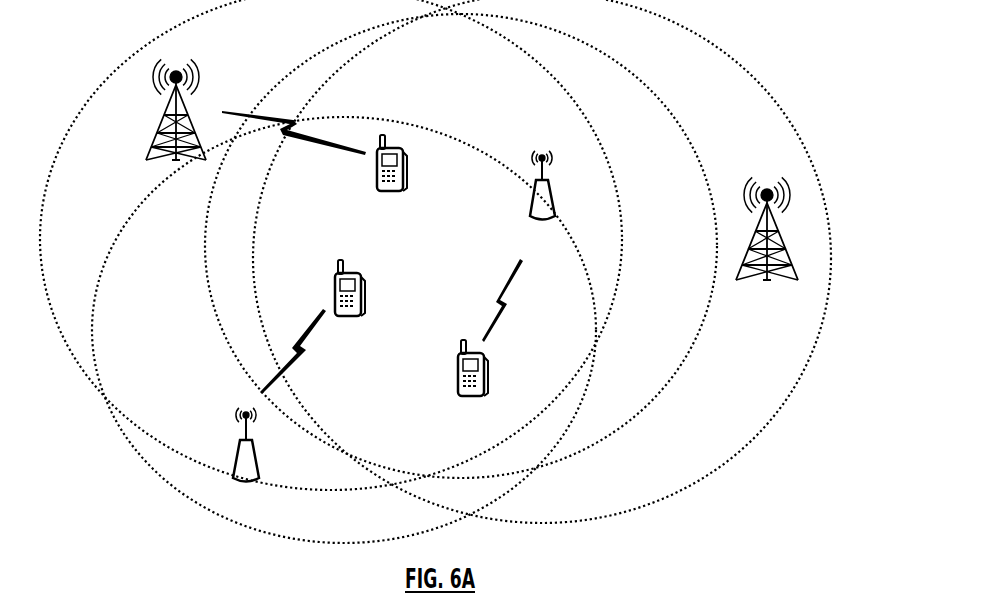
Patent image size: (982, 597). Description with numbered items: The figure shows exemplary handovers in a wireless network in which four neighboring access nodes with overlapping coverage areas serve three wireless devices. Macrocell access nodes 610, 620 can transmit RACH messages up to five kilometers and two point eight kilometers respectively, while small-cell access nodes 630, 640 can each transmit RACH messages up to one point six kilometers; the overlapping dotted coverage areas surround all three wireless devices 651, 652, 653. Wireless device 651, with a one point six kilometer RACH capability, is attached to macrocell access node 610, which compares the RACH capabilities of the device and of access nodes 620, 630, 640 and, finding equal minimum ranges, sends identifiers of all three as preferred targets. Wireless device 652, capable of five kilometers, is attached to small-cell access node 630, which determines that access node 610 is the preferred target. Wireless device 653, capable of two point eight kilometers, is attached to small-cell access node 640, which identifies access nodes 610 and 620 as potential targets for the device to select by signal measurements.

The macrocell access node 610 is at (160, 136).
The macrocell access node 620 is at (780, 247).
The small-cell access node 630 is at (240, 438).
The small-cell access node 640 is at (553, 187).
The wireless device 651 is at (397, 148).
The wireless device 652 is at (331, 297).
The wireless device 653 is at (490, 388).